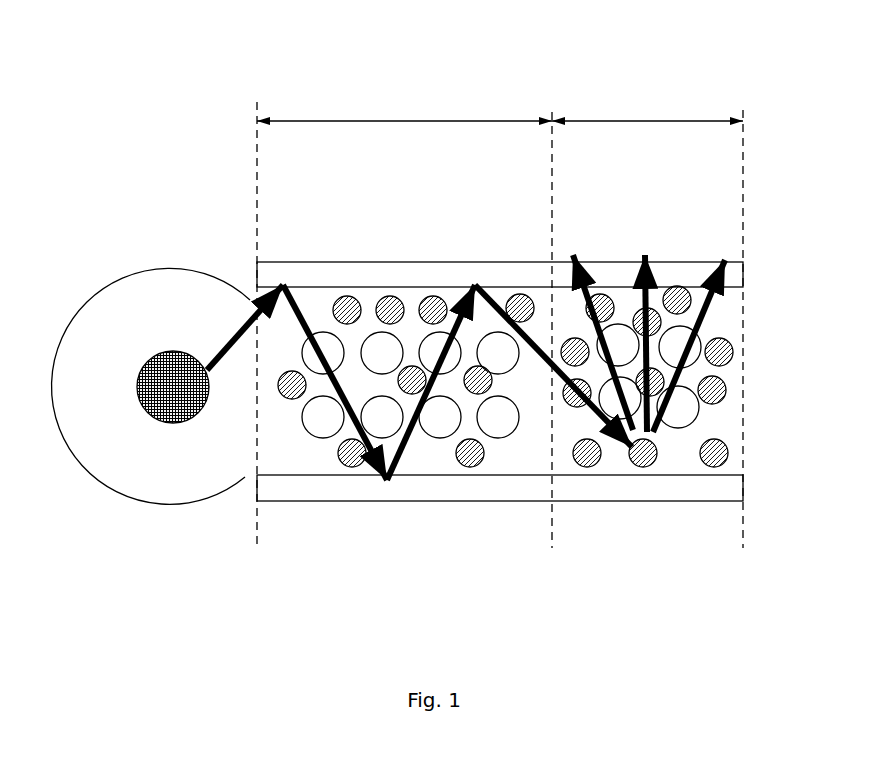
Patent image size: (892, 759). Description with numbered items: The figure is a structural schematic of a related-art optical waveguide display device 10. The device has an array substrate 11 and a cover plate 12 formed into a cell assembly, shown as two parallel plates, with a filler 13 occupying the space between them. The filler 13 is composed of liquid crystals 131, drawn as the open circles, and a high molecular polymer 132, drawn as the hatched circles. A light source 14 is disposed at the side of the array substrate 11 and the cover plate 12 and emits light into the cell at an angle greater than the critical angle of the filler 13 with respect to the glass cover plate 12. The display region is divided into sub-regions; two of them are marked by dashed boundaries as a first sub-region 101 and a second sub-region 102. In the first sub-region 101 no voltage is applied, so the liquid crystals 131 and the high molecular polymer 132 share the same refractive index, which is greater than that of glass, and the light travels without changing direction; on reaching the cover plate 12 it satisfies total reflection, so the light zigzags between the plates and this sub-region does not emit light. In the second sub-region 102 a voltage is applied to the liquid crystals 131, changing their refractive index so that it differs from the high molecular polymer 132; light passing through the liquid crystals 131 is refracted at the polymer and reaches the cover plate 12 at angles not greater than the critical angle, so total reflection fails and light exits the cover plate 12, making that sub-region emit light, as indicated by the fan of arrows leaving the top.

The optical waveguide display device 10 is at (538, 21).
The sub-region B1 101 is at (430, 167).
The sub-region B2 102 is at (690, 152).
The array substrate 11 is at (743, 501).
The cover plate 12 is at (743, 262).
The filler 13 is at (385, 553).
The liquid crystals 131 is at (313, 430).
The high molecular polymer 132 is at (458, 463).
The light source 14 is at (187, 270).